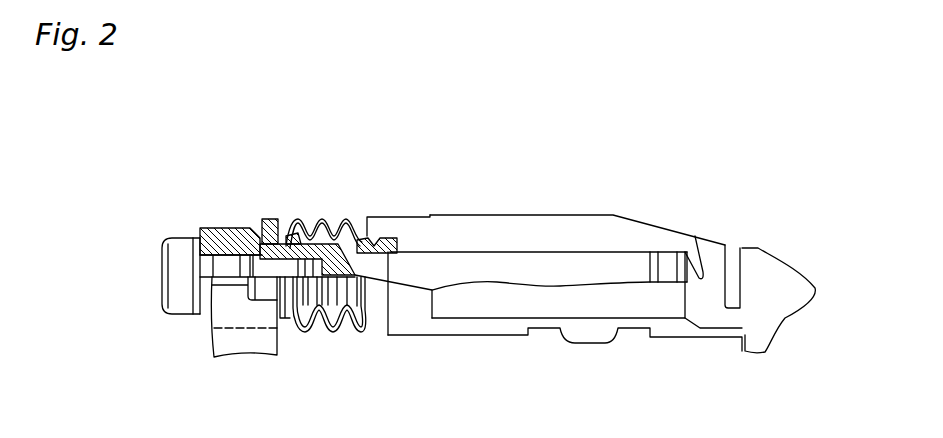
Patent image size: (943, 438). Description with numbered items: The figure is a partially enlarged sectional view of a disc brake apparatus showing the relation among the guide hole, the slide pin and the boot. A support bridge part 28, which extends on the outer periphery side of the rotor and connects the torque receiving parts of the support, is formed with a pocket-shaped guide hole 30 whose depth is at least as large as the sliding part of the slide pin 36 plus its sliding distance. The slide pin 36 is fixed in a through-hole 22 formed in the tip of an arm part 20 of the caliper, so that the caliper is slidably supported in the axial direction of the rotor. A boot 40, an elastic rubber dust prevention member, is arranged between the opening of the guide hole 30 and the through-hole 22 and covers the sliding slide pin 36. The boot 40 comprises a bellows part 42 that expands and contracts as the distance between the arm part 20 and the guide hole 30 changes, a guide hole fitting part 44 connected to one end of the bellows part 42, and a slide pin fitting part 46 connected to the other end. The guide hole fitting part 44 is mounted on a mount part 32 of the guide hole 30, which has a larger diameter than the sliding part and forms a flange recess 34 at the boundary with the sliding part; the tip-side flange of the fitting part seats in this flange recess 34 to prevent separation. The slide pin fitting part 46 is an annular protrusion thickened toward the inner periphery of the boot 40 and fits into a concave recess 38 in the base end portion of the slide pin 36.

The arm part 20 is at (228, 348).
The through-hole 22 is at (227, 253).
The support bridge part 28 is at (555, 232).
The guide hole 30 is at (585, 272).
The mount part 32 is at (387, 300).
The flange recess 34 is at (406, 248).
The slide pin 36 is at (650, 226).
The concave recess 38 is at (284, 244).
The boot 40 is at (335, 257).
The bellows part 42 is at (347, 234).
The guide hole fitting part 44 is at (375, 241).
The slide pin fitting part 46 is at (307, 236).